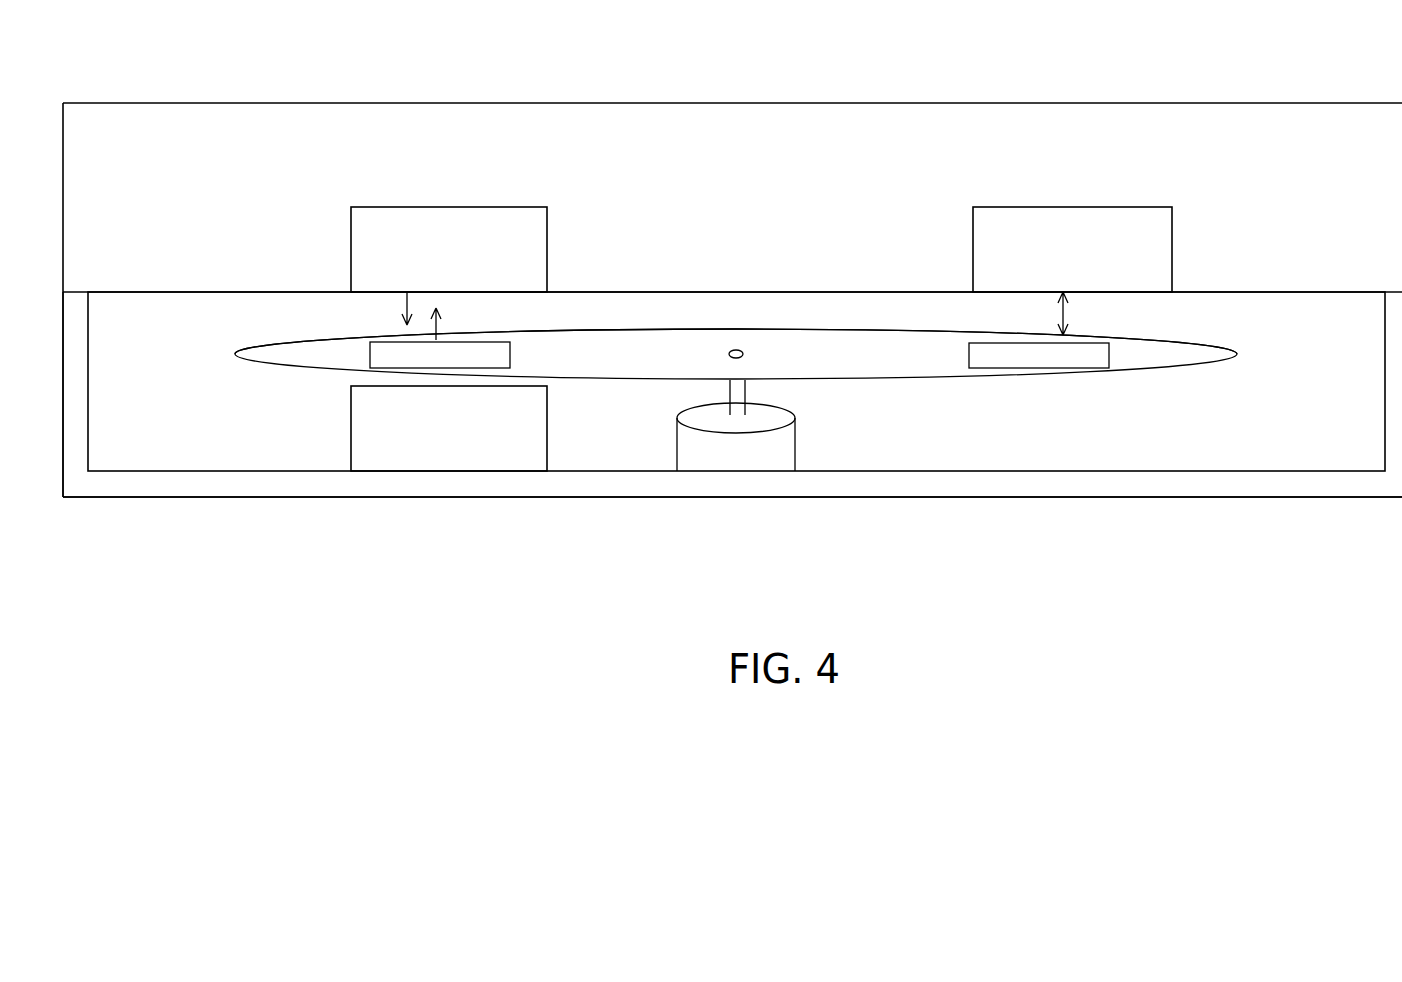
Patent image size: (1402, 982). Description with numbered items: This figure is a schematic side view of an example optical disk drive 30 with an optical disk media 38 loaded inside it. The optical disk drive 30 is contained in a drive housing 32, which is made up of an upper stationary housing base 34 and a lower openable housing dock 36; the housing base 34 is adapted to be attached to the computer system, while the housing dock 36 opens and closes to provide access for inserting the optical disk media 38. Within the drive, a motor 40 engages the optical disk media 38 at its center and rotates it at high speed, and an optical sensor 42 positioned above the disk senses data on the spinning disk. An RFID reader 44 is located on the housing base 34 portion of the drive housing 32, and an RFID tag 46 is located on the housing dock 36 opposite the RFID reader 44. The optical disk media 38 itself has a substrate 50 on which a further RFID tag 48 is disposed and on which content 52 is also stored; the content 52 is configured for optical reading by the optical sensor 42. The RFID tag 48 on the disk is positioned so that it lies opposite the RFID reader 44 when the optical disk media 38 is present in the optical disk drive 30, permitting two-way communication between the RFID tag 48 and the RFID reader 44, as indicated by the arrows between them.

The optical disk drive 30 is at (736, 381).
The drive housing 32 is at (873, 99).
The housing base 34 is at (732, 231).
The housing dock 36 is at (1212, 490).
The optical disk media 38 is at (736, 362).
The motor 40 is at (797, 453).
The optical sensor 42 is at (1172, 260).
The RFID reader 44 is at (547, 265).
The RFID tag 46 is at (547, 455).
The RFID tag 48 is at (512, 356).
The substrate 50 is at (648, 340).
The content 52 is at (968, 357).